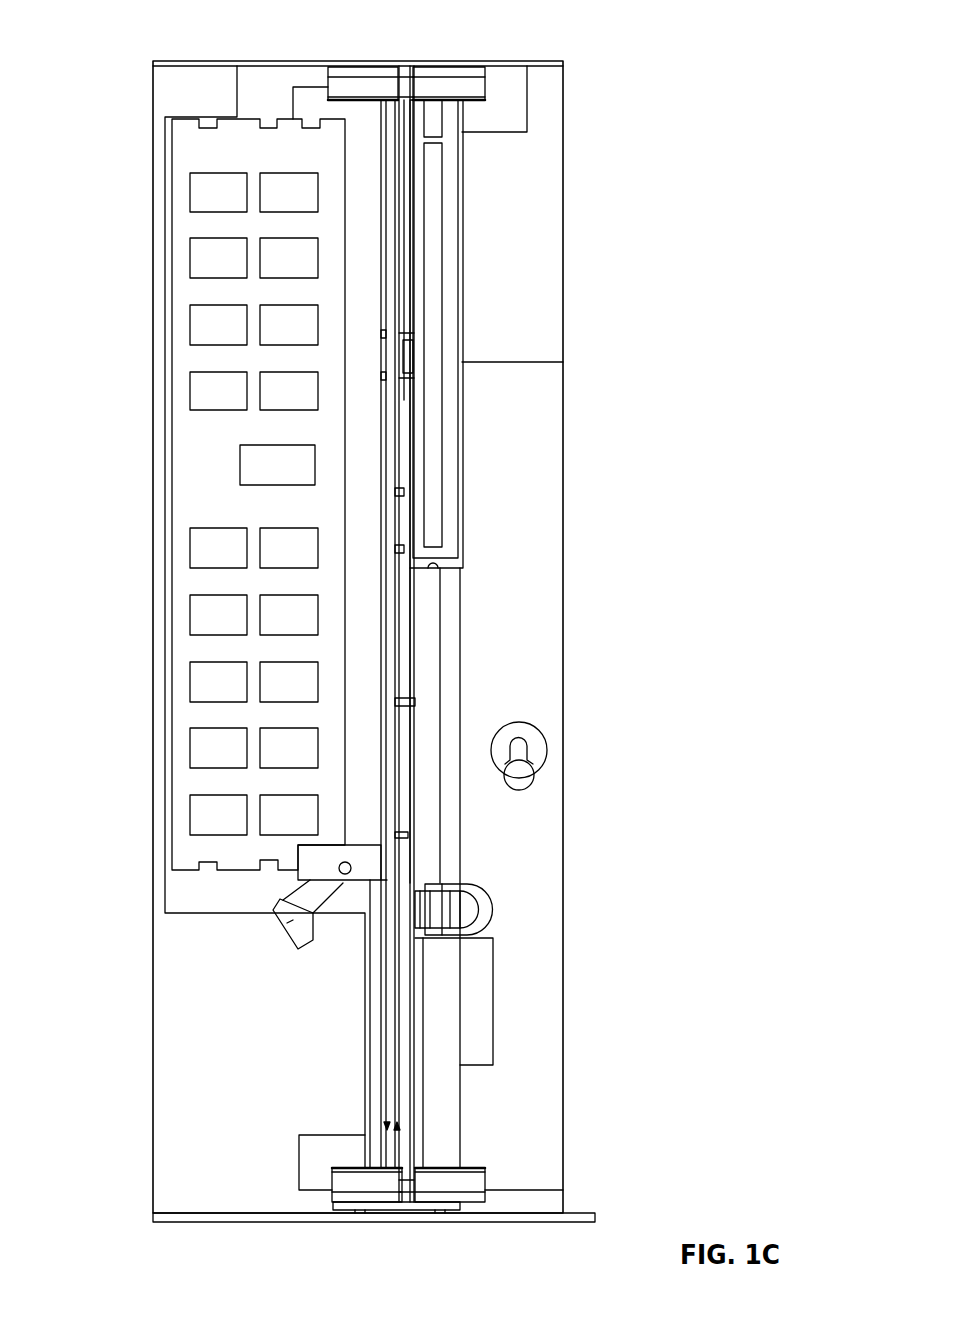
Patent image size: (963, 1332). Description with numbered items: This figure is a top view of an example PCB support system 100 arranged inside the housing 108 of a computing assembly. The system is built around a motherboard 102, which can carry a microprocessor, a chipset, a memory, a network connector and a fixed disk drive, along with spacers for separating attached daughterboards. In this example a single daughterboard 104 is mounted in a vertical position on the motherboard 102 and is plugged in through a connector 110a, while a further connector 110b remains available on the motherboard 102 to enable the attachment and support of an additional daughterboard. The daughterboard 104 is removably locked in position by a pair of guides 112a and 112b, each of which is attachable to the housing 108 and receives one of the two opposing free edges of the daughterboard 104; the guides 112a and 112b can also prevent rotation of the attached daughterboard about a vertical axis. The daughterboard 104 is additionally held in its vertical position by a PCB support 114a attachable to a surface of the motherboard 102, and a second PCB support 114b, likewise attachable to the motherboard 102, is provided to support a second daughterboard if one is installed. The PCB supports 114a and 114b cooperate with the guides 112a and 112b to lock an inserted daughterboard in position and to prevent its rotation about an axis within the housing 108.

The PCB support system 100 is at (128, 40).
The motherboard 102 is at (563, 530).
The first daughterboard 104 is at (271, 147).
The housing 108 is at (553, 1223).
The connector 110a is at (372, 1207).
The connector 110b is at (448, 428).
The guide 112a is at (457, 1180).
The guide 112b is at (447, 72).
The PCB support 114a is at (410, 353).
The PCB support 114b is at (478, 908).